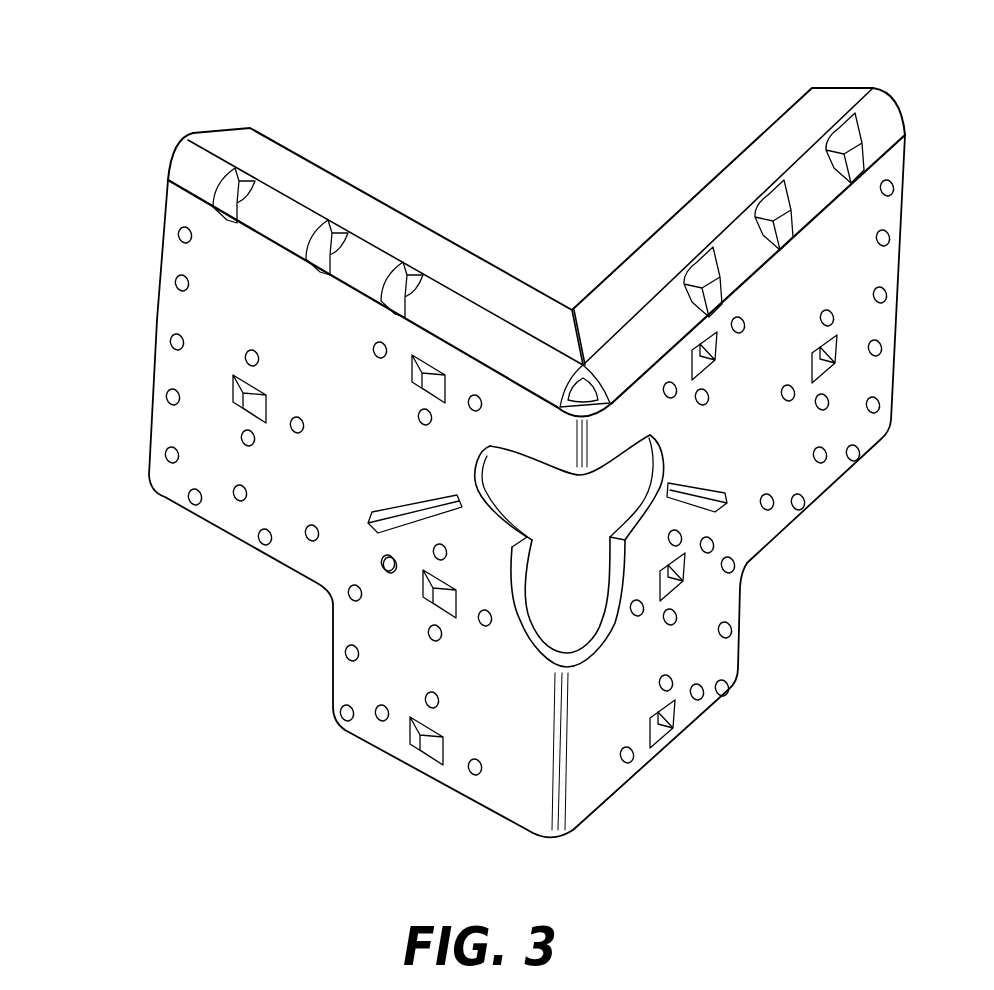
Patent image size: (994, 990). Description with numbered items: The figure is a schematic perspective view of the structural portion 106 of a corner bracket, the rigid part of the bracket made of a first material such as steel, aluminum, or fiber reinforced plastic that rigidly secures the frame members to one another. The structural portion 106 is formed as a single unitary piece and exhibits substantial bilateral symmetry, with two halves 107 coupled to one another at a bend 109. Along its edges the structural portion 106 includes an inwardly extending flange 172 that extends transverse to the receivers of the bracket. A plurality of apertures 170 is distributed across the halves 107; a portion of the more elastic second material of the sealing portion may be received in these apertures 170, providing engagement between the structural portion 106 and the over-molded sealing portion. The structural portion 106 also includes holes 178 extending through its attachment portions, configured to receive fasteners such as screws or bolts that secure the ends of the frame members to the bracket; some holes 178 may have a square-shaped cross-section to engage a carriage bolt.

The structural portion 106 is at (536, 219).
The halves 107 is at (130, 420).
The bend 109 is at (567, 763).
The apertures 170 is at (188, 496).
The inwardly extending flange 172 is at (810, 190).
The holes 178 is at (432, 292).